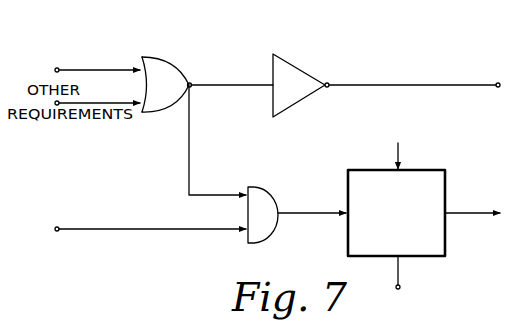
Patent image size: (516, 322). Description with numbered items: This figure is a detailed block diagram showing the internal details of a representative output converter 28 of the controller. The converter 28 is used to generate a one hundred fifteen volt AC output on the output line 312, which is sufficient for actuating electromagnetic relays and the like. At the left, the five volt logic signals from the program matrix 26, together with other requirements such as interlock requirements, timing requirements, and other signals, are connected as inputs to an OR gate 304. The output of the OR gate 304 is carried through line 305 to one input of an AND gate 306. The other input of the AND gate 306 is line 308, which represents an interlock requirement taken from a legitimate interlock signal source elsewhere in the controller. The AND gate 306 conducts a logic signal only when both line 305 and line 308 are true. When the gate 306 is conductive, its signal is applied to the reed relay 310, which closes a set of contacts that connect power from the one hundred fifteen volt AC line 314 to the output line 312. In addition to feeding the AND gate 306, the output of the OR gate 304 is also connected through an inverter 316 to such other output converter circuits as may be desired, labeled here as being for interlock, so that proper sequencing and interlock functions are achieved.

The program matrix 26 is at (73, 65).
The output converter 28 is at (243, 60).
The OR gate 304 is at (163, 82).
The line 305 is at (187, 133).
The AND gate 306 is at (257, 198).
The line 308 is at (59, 228).
The reed relay 310 is at (382, 245).
The output line 312 is at (465, 212).
The 115 volt AC line 314 is at (398, 149).
The inverter 316 is at (292, 63).